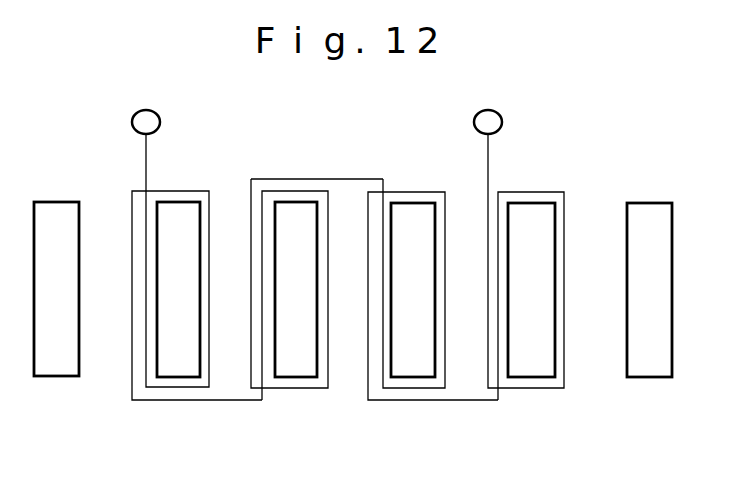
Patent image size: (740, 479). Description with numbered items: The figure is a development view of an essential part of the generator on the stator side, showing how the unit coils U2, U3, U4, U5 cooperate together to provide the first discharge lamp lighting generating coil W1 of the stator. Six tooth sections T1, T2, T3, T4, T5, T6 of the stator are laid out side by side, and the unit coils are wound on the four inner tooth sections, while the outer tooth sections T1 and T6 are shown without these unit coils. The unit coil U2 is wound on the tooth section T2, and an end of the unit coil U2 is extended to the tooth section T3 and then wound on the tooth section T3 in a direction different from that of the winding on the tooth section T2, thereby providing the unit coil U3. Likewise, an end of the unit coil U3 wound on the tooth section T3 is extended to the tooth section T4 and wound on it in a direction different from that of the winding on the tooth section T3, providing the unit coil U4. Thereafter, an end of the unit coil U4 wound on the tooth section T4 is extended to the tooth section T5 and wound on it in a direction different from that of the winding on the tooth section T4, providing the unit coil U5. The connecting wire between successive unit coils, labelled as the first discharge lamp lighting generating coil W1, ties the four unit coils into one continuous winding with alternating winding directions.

The tooth section T1 is at (57, 368).
The tooth section T2 is at (182, 362).
The tooth section T3 is at (298, 363).
The tooth section T4 is at (413, 363).
The tooth section T5 is at (535, 365).
The tooth section T6 is at (647, 365).
The unit coil U2 is at (180, 190).
The unit coil U3 is at (292, 178).
The unit coil U4 is at (425, 190).
The unit coil U5 is at (537, 190).
The first discharge lamp lighting generating coil W1 is at (364, 173).